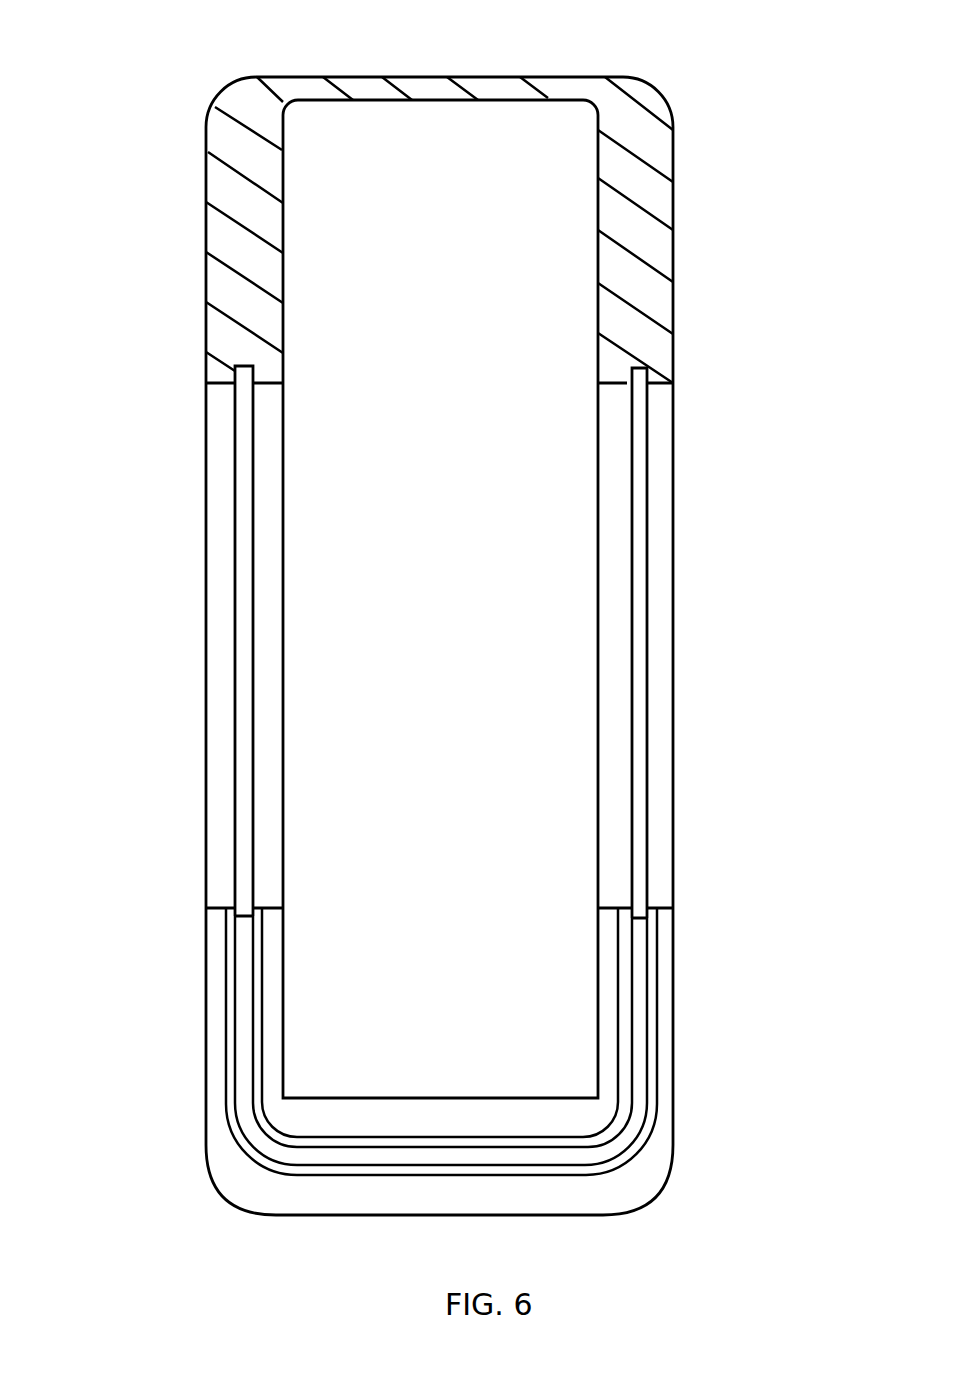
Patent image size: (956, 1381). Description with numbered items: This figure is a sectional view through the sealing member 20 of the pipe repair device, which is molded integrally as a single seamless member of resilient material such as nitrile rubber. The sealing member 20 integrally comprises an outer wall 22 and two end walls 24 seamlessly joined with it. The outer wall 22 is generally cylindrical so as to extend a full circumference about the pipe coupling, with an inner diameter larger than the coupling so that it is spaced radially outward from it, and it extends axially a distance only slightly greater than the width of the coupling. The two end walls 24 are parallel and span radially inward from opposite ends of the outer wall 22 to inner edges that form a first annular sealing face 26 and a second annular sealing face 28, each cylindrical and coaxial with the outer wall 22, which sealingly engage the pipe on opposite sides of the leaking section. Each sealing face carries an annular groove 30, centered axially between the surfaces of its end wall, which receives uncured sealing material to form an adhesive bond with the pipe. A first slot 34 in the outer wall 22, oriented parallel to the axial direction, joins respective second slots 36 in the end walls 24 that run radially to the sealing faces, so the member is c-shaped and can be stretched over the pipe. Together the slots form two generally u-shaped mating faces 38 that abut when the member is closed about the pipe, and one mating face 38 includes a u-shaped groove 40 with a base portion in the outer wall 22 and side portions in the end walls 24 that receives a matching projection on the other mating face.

The sealing member 20 is at (98, 169).
The outer wall 22 is at (467, 90).
The end walls 24 is at (206, 297).
The first annular sealing face 26 is at (673, 688).
The second annular sealing face 28 is at (220, 583).
The annular groove 30 is at (243, 450).
The first slot 34 is at (214, 990).
The second slots 36 is at (622, 1190).
The mating faces 38 is at (668, 1140).
The groove 40 is at (636, 1067).